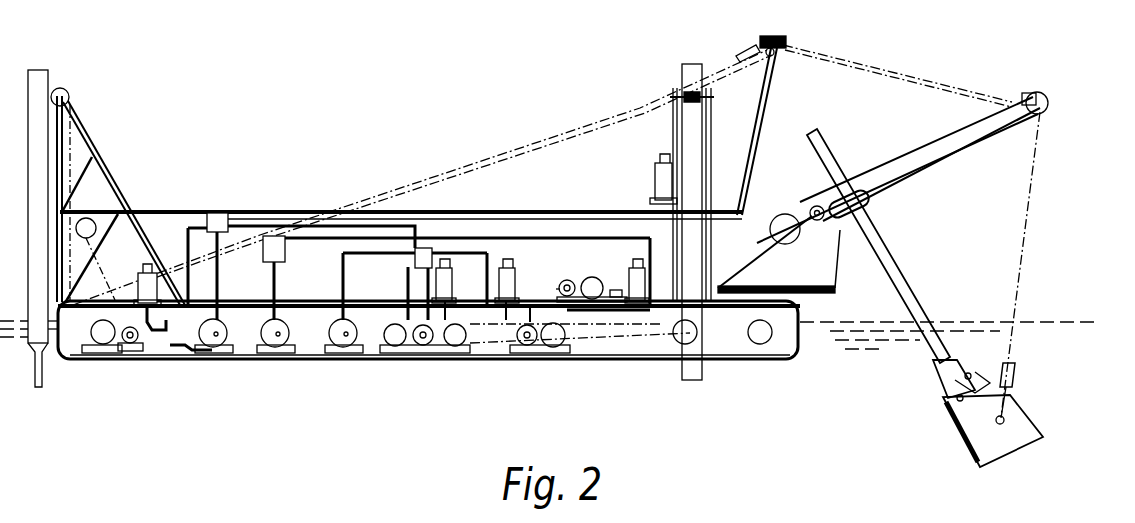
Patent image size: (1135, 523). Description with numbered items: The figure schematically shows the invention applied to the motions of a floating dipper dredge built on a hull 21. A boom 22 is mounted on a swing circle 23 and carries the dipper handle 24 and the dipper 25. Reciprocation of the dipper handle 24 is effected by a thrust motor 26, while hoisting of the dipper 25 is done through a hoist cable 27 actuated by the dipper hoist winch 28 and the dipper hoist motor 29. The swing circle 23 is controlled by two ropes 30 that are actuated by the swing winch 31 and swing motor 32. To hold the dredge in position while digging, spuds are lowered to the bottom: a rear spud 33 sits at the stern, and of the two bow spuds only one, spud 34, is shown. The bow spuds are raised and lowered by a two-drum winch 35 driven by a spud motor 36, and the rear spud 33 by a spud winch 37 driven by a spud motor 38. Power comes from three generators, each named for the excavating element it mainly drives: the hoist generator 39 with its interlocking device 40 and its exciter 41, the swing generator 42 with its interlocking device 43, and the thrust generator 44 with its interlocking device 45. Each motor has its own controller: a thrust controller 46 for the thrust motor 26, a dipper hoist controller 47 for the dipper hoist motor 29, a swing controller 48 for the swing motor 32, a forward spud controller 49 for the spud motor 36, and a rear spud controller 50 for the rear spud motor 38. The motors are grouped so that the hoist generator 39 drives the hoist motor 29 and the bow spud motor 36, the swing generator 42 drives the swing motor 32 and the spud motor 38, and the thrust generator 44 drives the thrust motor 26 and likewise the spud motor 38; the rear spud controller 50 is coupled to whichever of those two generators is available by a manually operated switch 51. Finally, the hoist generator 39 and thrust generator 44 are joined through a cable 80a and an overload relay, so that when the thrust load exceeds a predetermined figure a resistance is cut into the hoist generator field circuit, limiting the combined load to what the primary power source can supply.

The hull 21 is at (750, 360).
The boom 22 is at (940, 201).
The swing circle 23 is at (838, 293).
The dipper handle 24 is at (913, 274).
The dipper 25 is at (1027, 429).
The thrust motor 26 is at (812, 205).
The hoist cable 27 is at (1030, 260).
The dipper hoist winch 28 is at (455, 353).
The dipper hoist motor 29 is at (423, 353).
The ropes 30 is at (616, 290).
The swing winch 31 is at (592, 277).
The swing motor 32 is at (567, 280).
The rear spud 33 is at (45, 70).
The bow spud 34 is at (690, 62).
The two-drum winch 35 is at (548, 353).
The spud motor 36 is at (527, 353).
The spud winch 37 is at (103, 338).
The spud motor 38 is at (130, 343).
The hoist generator 39 is at (343, 347).
The interlocking device 40 is at (424, 248).
The exciter 41 is at (395, 346).
The swing generator 42 is at (275, 347).
The interlocking device 43 is at (275, 236).
The thrust generator 44 is at (213, 347).
The interlocking device 45 is at (216, 212).
The thrust controller 46 is at (655, 185).
The dipper hoist controller 47 is at (452, 287).
The swing controller 48 is at (645, 284).
The forward spud controller 49 is at (525, 280).
The rear spud controller 50 is at (135, 283).
The manually operated switch 51 is at (166, 335).
The cable 80a is at (345, 230).